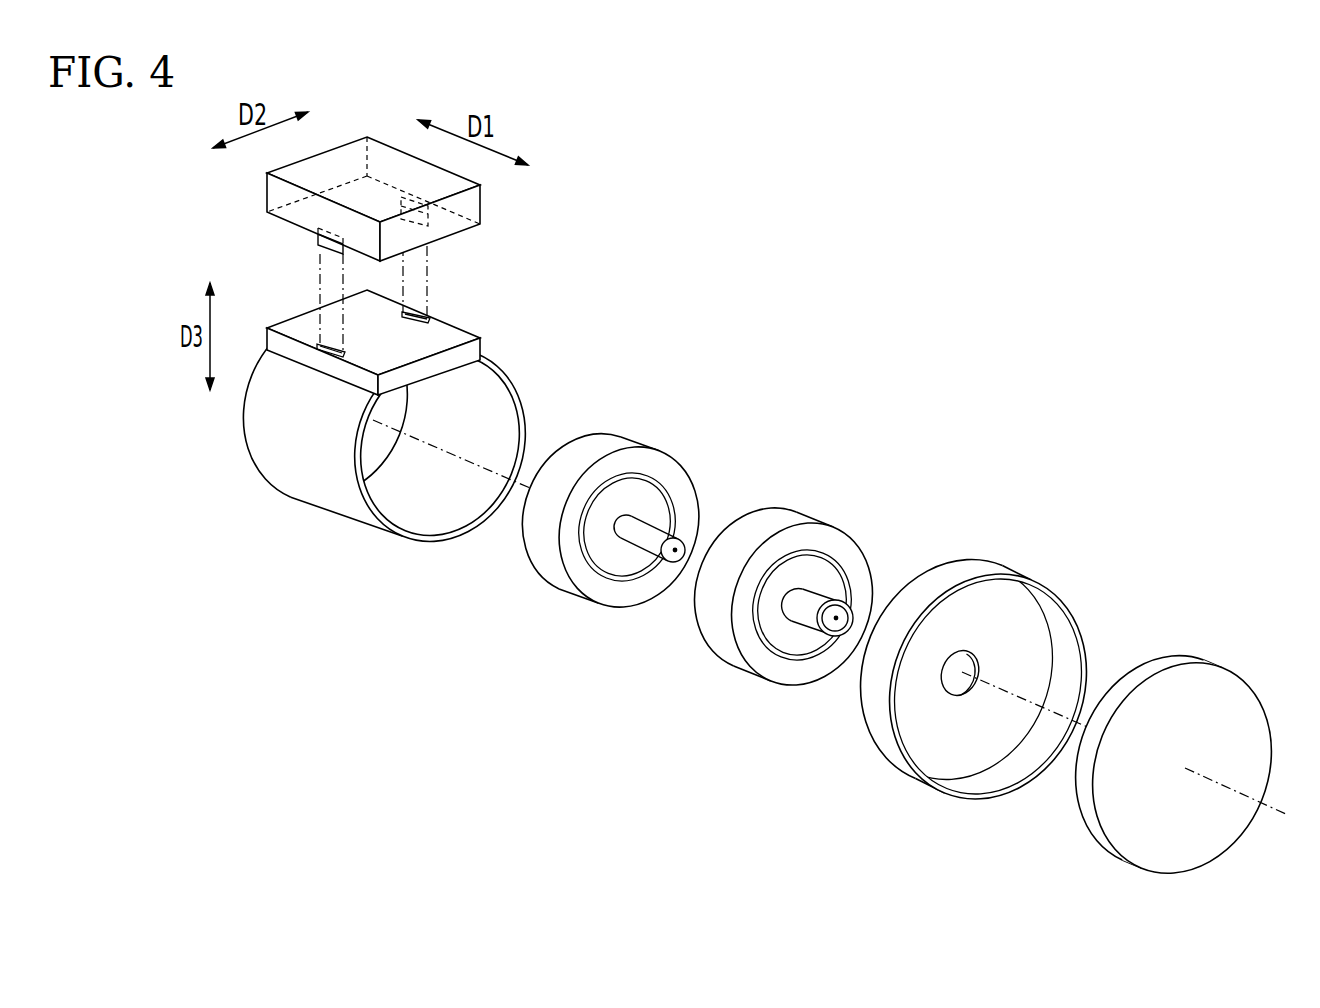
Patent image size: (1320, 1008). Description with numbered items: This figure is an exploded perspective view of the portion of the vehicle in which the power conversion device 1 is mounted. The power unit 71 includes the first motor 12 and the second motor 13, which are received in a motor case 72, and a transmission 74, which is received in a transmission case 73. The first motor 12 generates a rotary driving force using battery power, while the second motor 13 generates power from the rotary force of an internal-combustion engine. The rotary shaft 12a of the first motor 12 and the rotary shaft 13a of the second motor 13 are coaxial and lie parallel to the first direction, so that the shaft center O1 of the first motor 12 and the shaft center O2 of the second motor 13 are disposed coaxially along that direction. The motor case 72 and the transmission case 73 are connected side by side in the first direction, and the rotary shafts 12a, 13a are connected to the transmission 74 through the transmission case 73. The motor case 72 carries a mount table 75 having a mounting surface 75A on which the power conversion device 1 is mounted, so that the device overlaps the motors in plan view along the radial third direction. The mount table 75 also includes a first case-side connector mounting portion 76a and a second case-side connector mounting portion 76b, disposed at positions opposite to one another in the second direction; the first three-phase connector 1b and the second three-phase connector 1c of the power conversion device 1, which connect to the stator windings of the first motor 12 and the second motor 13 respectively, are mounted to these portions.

The power conversion device 1 is at (372, 151).
The first three-phase connector 1b is at (318, 238).
The second three-phase connector 1c is at (428, 204).
The first motor 12 is at (796, 571).
The rotary shaft of the first motor 12a is at (828, 597).
The second motor 13 is at (622, 499).
The rotary shaft of the second motor 13a is at (655, 533).
The power unit 71 is at (963, 416).
The motor case 72 is at (525, 420).
The transmission case 73 is at (1020, 575).
The transmission 74 is at (1218, 667).
The mount table 75 is at (412, 323).
The mounting surface 75A is at (440, 338).
The first case-side connector mounting portion 76a is at (330, 345).
The second case-side connector mounting portion 76b is at (415, 315).
The shaft center of the first motor O1 is at (836, 618).
The shaft center of the second motor O2 is at (675, 550).